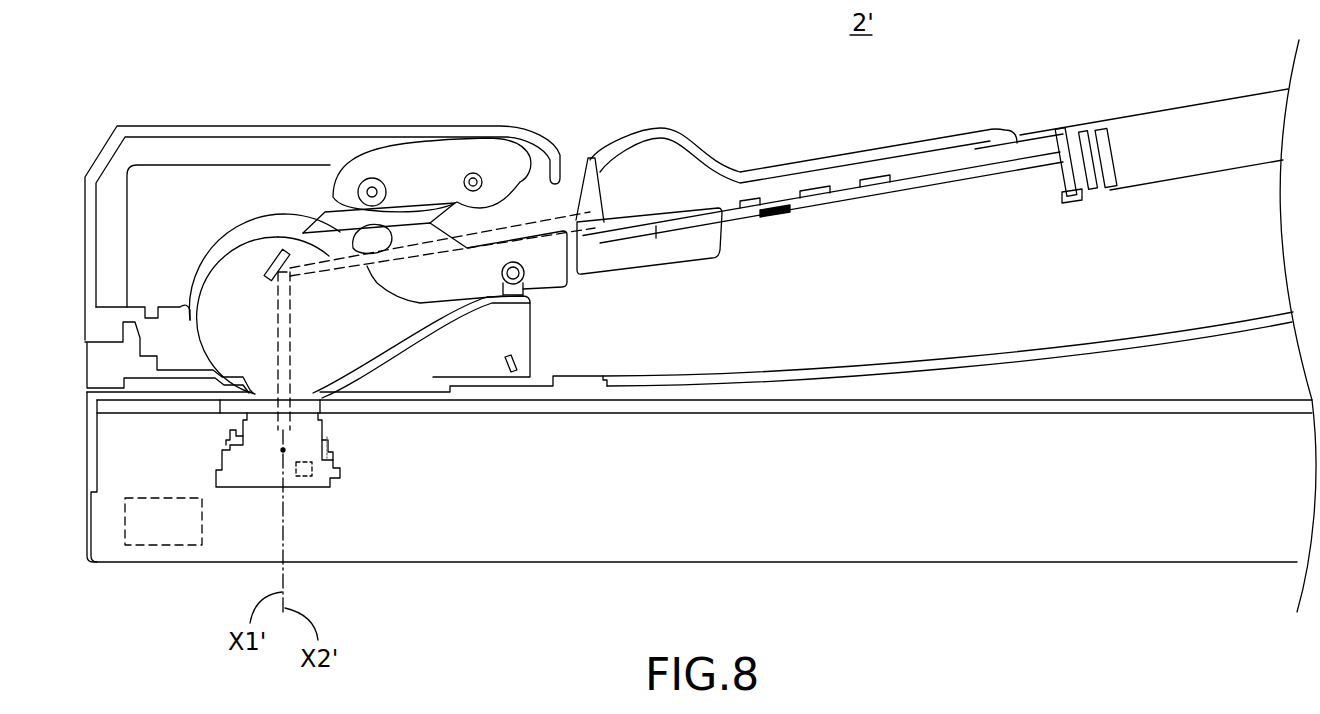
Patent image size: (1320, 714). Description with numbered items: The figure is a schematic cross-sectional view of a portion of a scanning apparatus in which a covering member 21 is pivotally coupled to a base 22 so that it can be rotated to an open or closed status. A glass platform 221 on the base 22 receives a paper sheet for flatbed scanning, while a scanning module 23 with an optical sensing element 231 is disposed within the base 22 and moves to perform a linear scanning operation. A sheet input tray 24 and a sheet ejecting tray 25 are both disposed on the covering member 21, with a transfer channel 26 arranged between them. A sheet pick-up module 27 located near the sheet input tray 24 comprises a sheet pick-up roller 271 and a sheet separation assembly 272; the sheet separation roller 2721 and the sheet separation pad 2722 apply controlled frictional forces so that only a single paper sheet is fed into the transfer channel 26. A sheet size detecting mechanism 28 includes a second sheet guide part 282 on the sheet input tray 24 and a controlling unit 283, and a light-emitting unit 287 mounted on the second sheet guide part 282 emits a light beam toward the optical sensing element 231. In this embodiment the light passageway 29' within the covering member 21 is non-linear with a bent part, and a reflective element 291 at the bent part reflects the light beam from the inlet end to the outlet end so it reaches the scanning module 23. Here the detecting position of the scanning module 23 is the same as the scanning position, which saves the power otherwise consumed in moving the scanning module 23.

The covering member 21 is at (193, 148).
The base 22 is at (1093, 545).
The glass platform 221 is at (1168, 406).
The scanning module 23 is at (264, 472).
The optical sensing element 231 is at (313, 472).
The sheet input tray 24 is at (1187, 123).
The sheet ejecting tray 25 is at (1088, 333).
The transfer channel 26 is at (218, 262).
The sheet pick-up module 27 is at (410, 150).
The sheet pick-up roller 271 is at (573, 265).
The sheet separation assembly 272 is at (378, 170).
The sheet separation roller 2721 is at (360, 217).
The sheet separation pad 2722 is at (478, 175).
The sheet size detecting mechanism 28 is at (838, 205).
The second sheet guide part 282 is at (847, 170).
The controlling unit 283 is at (173, 533).
The light-emitting unit 287 is at (592, 207).
The light passageway 29' is at (442, 255).
The reflective element 291 is at (263, 272).